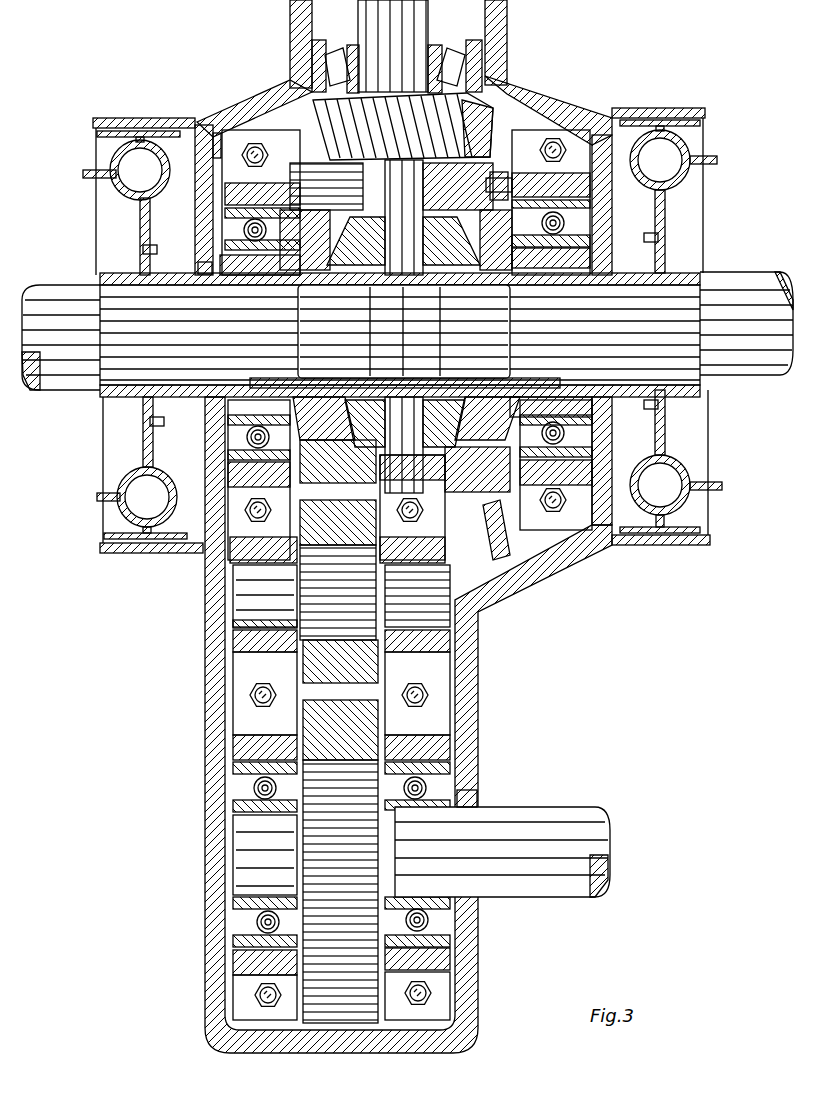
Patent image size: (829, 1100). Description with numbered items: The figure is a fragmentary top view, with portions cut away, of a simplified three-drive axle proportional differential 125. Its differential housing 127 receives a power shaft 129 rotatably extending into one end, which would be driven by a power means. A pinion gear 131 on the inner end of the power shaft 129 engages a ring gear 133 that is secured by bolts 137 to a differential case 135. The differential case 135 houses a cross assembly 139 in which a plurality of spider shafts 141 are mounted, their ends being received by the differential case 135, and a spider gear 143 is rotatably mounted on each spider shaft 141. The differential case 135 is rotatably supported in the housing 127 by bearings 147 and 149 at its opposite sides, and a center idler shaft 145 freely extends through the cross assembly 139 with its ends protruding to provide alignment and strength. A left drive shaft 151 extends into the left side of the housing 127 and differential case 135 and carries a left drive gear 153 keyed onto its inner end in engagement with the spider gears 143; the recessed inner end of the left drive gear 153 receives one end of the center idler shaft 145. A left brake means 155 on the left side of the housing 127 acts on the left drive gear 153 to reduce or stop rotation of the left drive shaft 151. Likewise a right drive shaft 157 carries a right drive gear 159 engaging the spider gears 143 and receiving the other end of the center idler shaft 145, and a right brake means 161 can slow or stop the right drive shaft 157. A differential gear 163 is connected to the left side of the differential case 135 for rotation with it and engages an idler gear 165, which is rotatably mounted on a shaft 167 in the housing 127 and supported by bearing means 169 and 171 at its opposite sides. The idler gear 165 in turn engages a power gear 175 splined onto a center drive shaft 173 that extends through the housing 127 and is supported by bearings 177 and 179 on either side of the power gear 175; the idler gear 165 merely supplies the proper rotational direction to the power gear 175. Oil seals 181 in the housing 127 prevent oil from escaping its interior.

The three-drive axle proportional differential 125 is at (512, 600).
The differential housing 127 is at (552, 80).
The power shaft 129 is at (378, 18).
The pinion gear 131 is at (345, 125).
The ring gear 133 is at (494, 122).
The differential case 135 is at (462, 535).
The bolts 137 is at (500, 172).
The cross assembly 139 is at (407, 278).
The spider shafts 141 is at (406, 326).
The spider gear 143 is at (403, 332).
The center idler shaft 145 is at (404, 331).
The bearing 147 is at (214, 132).
The bearing 149 is at (565, 225).
The left drive shaft 151 is at (55, 300).
The left drive gear 153 is at (328, 412).
The left brake means 155 is at (139, 112).
The right drive shaft 157 is at (745, 290).
The right drive gear 159 is at (486, 412).
The right brake means 161 is at (693, 104).
The differential gear 163 is at (315, 180).
The idler gear 165 is at (338, 540).
The shaft 167 is at (247, 587).
The bearing means 169 is at (263, 540).
The bearing means 171 is at (432, 655).
The center drive shaft 173 is at (552, 817).
The power gear 175 is at (340, 831).
The bearing 177 is at (255, 925).
The bearing 179 is at (432, 920).
The oil seals 181 is at (195, 275).